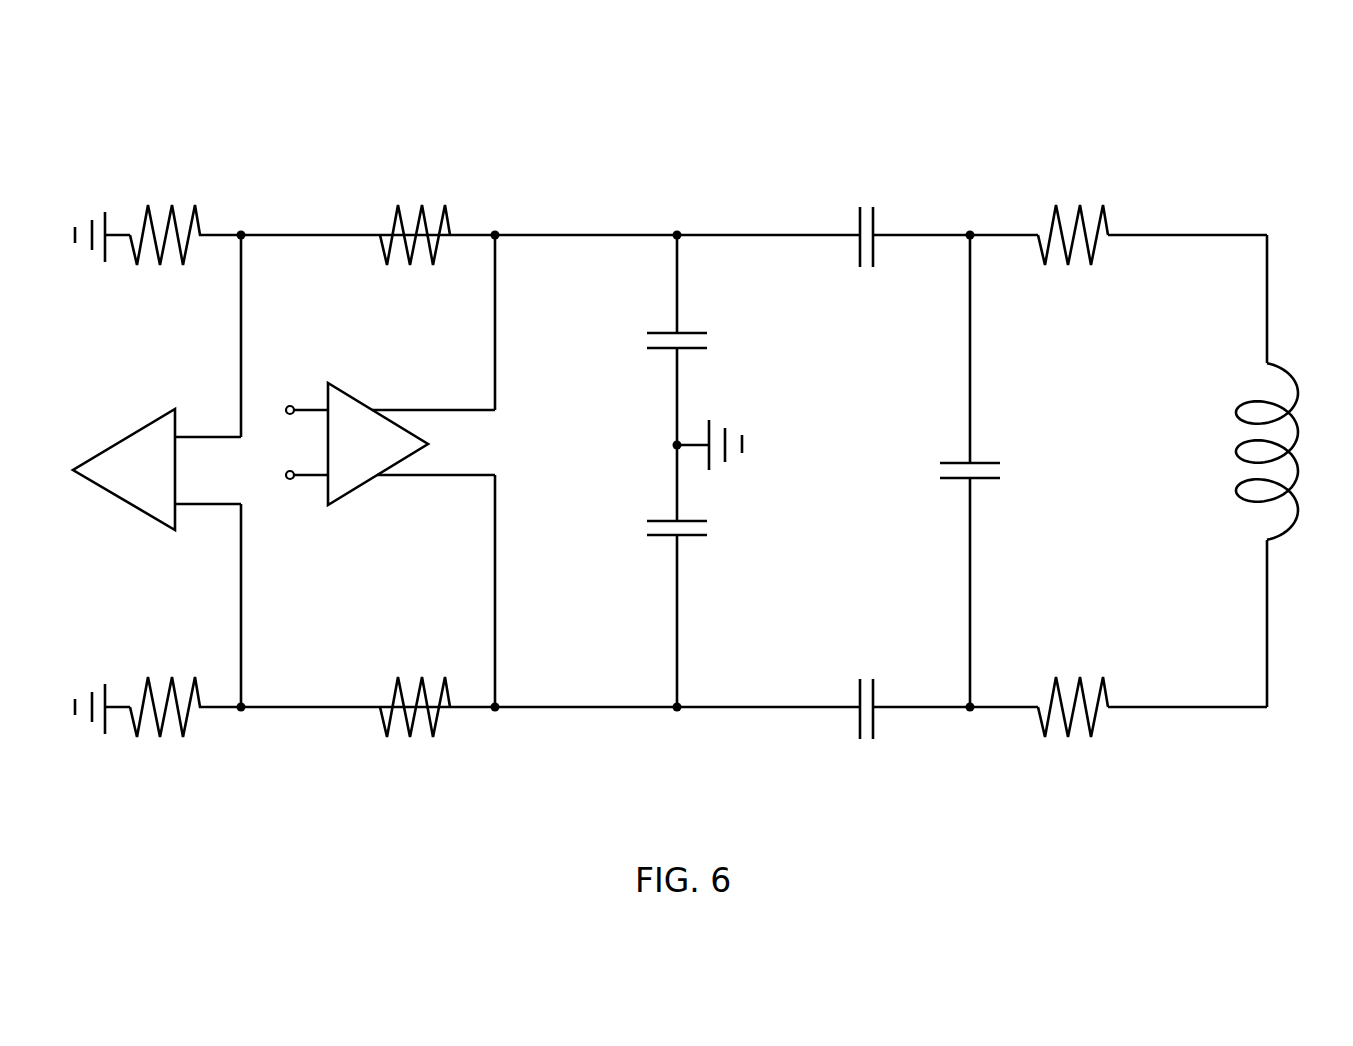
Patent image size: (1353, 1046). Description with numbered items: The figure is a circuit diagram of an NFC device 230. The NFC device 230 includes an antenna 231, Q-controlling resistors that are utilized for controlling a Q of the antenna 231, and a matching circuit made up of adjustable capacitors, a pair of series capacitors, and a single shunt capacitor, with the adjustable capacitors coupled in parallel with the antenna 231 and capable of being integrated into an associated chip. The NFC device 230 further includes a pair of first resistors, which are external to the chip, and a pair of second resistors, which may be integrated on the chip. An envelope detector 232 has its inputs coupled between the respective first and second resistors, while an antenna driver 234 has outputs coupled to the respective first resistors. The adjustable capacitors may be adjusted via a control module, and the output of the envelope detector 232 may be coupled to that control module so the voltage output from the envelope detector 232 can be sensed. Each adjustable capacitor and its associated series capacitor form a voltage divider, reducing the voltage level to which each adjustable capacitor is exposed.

The NFC device 230 is at (705, 420).
The antenna 231 is at (1293, 533).
The envelope detector 232 is at (177, 523).
The antenna driver 234 is at (326, 498).